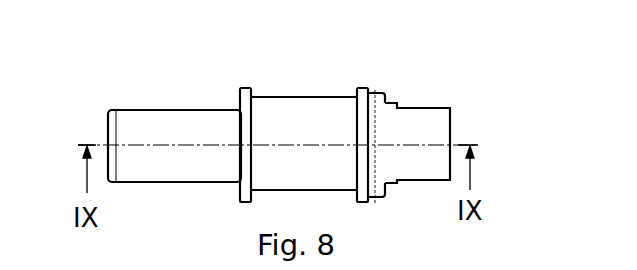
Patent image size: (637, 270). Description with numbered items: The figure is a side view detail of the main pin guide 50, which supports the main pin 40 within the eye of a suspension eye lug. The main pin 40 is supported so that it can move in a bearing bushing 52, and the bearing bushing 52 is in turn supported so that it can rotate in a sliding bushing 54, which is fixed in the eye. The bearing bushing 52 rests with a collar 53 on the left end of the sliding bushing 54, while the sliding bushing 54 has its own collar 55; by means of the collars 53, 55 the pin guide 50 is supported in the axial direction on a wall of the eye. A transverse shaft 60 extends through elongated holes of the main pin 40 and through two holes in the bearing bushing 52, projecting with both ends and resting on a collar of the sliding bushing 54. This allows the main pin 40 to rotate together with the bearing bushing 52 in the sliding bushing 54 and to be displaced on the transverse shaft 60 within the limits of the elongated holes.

The main pin 40 is at (165, 125).
The main pin guide 50 is at (330, 58).
The bearing bushing 52 is at (389, 178).
The collar 53 is at (243, 88).
The sliding bushing 54 is at (310, 117).
The collar 55 is at (360, 88).
The transverse shaft 60 is at (383, 93).